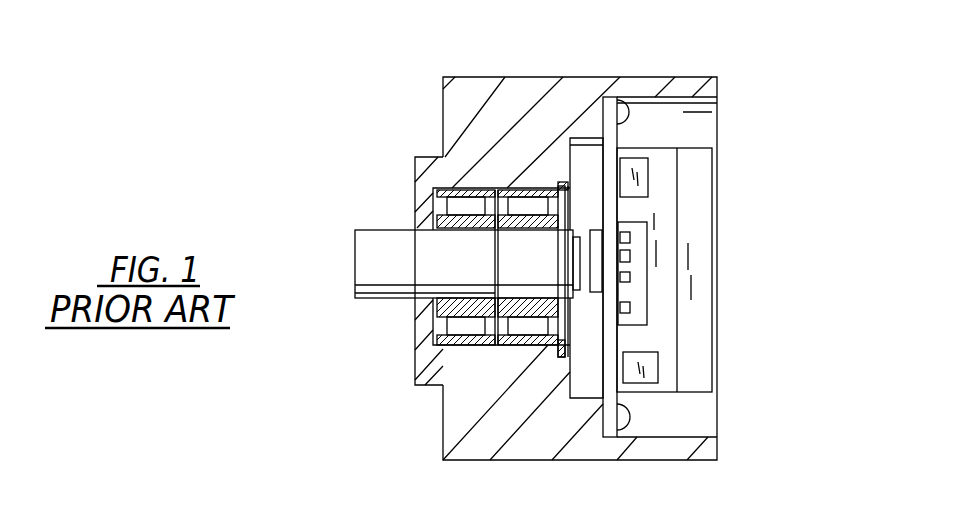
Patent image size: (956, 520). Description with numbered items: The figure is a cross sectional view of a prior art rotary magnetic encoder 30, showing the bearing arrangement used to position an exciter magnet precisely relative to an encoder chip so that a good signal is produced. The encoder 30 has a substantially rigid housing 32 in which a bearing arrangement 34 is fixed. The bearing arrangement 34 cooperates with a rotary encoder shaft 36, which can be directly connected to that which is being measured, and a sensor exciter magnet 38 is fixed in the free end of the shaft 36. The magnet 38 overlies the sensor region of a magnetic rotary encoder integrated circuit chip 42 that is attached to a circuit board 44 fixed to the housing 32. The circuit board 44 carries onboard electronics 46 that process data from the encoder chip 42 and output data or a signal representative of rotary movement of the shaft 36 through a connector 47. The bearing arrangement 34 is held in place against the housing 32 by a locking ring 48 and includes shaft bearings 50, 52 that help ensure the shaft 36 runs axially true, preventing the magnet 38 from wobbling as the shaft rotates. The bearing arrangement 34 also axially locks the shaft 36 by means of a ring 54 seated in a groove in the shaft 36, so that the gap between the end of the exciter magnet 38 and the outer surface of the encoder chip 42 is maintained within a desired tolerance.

The rotary magnetic encoder 30 is at (433, 88).
The housing 32 is at (535, 77).
The bearing arrangement 34 is at (455, 362).
The rotary encoder shaft 36 is at (358, 245).
The sensor exciter magnet 38 is at (587, 313).
The magnetic rotary encoder integrated circuit chip 42 is at (591, 218).
The circuit board 44 is at (613, 150).
The onboard electronics 46 is at (683, 206).
The connector 47 is at (653, 366).
The locking ring 48 is at (560, 355).
The shaft bearing 50 is at (467, 193).
The shaft bearing 52 is at (528, 193).
The ring 54 is at (495, 252).